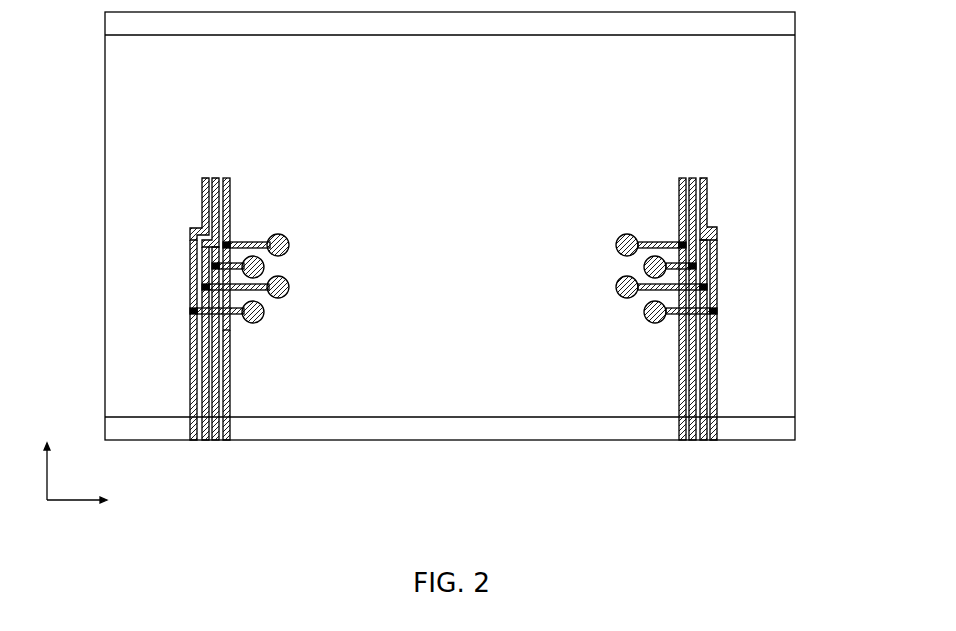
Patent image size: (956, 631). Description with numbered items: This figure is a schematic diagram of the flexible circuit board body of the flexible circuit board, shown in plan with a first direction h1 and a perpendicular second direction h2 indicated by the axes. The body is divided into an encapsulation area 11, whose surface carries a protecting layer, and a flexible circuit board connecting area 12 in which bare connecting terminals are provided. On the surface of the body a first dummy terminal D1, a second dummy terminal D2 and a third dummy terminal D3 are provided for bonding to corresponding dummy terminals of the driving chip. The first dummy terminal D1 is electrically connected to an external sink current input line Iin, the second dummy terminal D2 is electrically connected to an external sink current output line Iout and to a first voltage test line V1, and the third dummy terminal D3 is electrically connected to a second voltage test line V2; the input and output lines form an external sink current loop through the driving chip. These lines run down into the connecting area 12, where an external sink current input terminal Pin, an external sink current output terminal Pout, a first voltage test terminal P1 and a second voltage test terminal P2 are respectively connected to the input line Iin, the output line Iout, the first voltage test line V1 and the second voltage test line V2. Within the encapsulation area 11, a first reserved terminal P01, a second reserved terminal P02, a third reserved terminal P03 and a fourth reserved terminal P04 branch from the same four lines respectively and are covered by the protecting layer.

The encapsulation area 11 is at (785, 215).
The flexible circuit board connecting area 12 is at (785, 25).
The first dummy terminal D1 is at (204, 178).
The second dummy terminal D2 is at (213, 178).
The third dummy terminal D3 is at (226, 178).
The external sink current input line Iin is at (192, 288).
The external sink current output line Iout is at (192, 342).
The external sink current input terminal Pin is at (192, 442).
The external sink current output terminal Pout is at (205, 442).
The first voltage test terminal P1 is at (215, 442).
The second voltage test terminal P2 is at (227, 442).
The first reserved terminal P01 is at (265, 308).
The second reserved terminal P02 is at (290, 285).
The third reserved terminal P03 is at (265, 263).
The fourth reserved terminal P04 is at (290, 240).
The first voltage test line V1 is at (217, 368).
The second voltage test line V2 is at (228, 337).
The first direction h1 is at (50, 458).
The second direction h2 is at (93, 503).